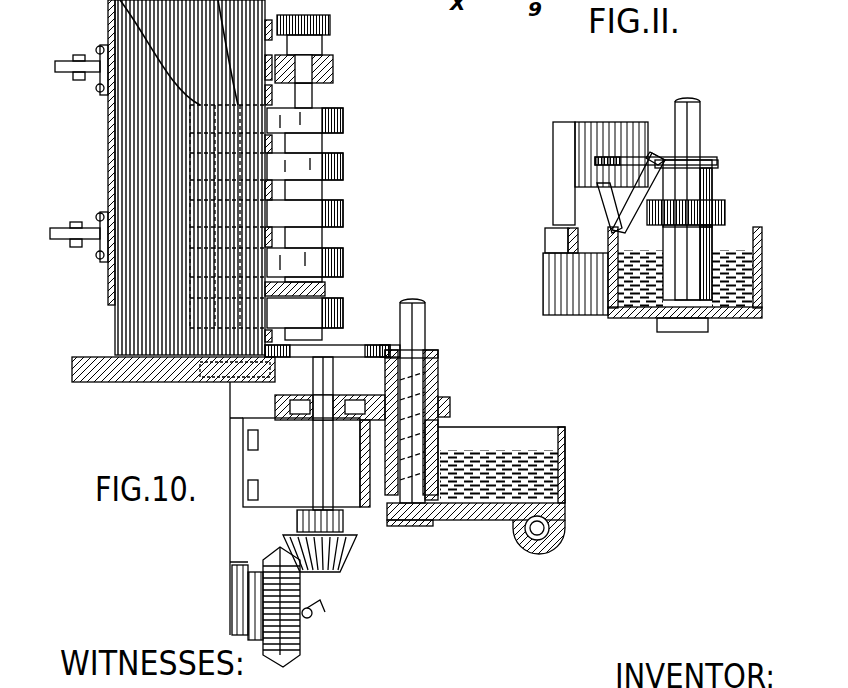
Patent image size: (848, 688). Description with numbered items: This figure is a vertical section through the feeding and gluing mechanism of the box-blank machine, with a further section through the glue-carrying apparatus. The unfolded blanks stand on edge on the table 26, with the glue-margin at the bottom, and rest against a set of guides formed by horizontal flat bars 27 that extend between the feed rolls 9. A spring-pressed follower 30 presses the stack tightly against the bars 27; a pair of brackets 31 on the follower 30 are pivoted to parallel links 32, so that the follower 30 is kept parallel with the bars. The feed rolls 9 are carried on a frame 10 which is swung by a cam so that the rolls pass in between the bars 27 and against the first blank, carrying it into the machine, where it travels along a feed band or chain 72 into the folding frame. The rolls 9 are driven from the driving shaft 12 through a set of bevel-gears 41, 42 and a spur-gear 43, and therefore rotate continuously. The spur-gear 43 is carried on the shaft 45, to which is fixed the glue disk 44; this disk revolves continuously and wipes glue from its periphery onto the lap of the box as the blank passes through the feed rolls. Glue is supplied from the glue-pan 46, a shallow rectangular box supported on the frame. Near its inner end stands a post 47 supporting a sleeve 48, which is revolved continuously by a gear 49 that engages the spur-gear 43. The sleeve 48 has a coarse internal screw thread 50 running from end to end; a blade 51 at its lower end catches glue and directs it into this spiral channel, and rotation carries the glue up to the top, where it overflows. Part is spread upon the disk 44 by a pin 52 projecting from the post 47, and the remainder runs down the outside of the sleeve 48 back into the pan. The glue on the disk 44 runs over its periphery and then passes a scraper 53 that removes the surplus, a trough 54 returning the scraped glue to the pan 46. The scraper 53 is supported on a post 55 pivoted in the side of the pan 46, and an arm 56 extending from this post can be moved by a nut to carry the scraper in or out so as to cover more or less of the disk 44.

In FIG. 10, the feed rolls 9 is at (305, 264).
In FIG. 10, the frame 10 is at (335, 68).
In FIG. 10, the driving shaft 12 is at (310, 618).
In FIG. 10, the table 26 is at (140, 383).
In FIG. 10, the horizontal flat bars 27 is at (335, 147).
In FIG. 10, the spring-pressed follower 30 is at (108, 295).
In FIG. 10, the brackets 31 is at (107, 90).
In FIG. 10, the parallel links 32 is at (68, 75).
In FIG. 10, the bevel-gear 41 is at (292, 655).
In FIG. 10, the bevel-gear 42 is at (343, 570).
In FIG. 10, the spur-gear 43 is at (275, 405).
In FIG. 10, the glue disk 44 is at (330, 350).
In FIG. 11, the glue disk 44 is at (612, 157).
In FIG. 10, the shaft 45 is at (318, 466).
In FIG. 10, the glue-pan 46 is at (515, 440).
In FIG. 11, the glue-pan 46 is at (762, 243).
In FIG. 10, the post 47 is at (418, 322).
In FIG. 11, the post 47 is at (700, 118).
In FIG. 10, the sleeve 48 is at (438, 358).
In FIG. 11, the sleeve 48 is at (712, 180).
In FIG. 10, the gear 49 is at (450, 405).
In FIG. 11, the gear 49 is at (725, 210).
In FIG. 10, the internal screw thread 50 is at (440, 448).
In FIG. 10, the blade 51 is at (383, 500).
In FIG. 11, the blade 51 is at (640, 305).
In FIG. 10, the pin 52 is at (400, 350).
In FIG. 11, the pin 52 is at (650, 152).
In FIG. 11, the scraper 53 is at (585, 130).
In FIG. 11, the trough 54 is at (620, 210).
In FIG. 11, the post 55 is at (553, 195).
In FIG. 11, the arm 56 is at (568, 240).
In FIG. 10, the feed band or chain 72 is at (185, 383).